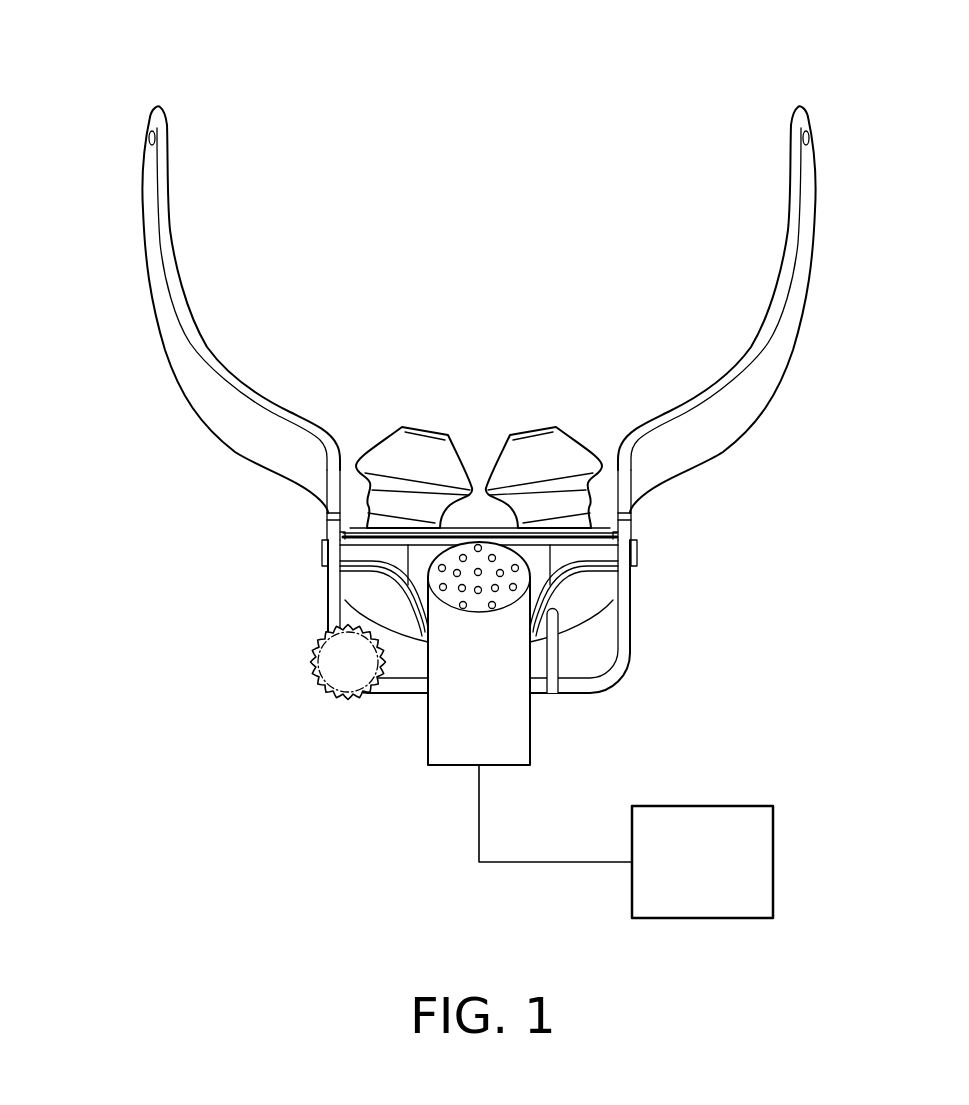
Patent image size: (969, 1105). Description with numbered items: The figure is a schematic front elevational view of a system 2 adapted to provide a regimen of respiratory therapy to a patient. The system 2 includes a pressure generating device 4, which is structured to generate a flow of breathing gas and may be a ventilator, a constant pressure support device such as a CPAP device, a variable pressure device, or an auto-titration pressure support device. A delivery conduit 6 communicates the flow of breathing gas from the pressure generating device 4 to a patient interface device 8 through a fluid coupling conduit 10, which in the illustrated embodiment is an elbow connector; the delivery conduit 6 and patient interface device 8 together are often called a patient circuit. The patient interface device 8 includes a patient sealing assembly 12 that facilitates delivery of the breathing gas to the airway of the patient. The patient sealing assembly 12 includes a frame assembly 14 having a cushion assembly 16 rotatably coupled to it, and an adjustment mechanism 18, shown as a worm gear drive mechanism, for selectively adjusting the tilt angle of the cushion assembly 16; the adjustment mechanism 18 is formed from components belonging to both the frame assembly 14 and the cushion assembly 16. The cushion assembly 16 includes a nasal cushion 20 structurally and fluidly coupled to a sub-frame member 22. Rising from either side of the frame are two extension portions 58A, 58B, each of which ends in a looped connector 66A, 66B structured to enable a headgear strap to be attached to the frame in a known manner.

The system 2 is at (635, 90).
The pressure generating device 4 is at (703, 806).
The delivery conduit 6 is at (479, 823).
The patient interface device 8 is at (278, 613).
The fluid coupling conduit 10 is at (440, 738).
The patient sealing assembly 12 is at (645, 589).
The frame assembly 14 is at (645, 520).
The cushion assembly 16 is at (482, 440).
The adjustment mechanism 18 is at (316, 694).
The nasal cushion 20 is at (358, 522).
The sub-frame member 22 is at (558, 695).
The extension portion 58A is at (153, 255).
The extension portion 58B is at (805, 256).
The looped connector 66A is at (150, 138).
The looped connector 66B is at (812, 139).